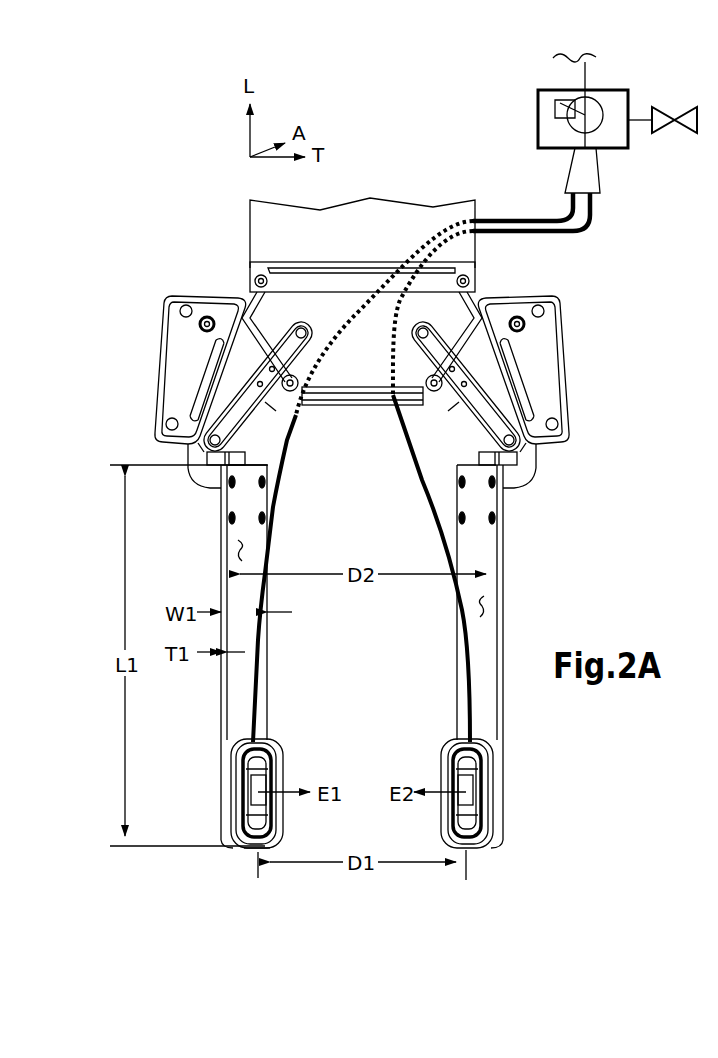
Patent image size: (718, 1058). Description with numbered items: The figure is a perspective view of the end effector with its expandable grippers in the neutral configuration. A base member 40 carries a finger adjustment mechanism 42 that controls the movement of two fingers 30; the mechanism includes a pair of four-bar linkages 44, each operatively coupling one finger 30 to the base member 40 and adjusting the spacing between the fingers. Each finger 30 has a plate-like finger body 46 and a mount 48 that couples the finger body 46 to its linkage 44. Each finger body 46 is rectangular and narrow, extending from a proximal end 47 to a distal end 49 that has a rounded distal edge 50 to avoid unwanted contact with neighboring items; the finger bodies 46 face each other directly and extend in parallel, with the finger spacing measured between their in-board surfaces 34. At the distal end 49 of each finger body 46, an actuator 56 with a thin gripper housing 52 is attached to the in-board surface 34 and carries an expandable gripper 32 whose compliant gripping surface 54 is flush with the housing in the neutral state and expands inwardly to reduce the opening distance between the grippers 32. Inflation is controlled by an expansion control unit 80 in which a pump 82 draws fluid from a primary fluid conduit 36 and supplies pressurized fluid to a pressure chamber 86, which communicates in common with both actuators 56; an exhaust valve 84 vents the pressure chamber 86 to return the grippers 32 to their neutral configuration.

The finger 30 is at (404, 656).
The expandable gripper 32 is at (281, 755).
The in-board surface 34 is at (238, 550).
The primary fluid conduit 36 is at (577, 66).
The base member 40 is at (333, 300).
The finger adjustment mechanism 42 is at (147, 379).
The linkage 44 is at (160, 340).
The finger body 46 is at (404, 656).
The proximal end 47 is at (255, 458).
The mount 48 is at (247, 508).
The distal end 49 is at (250, 842).
The rounded distal edge 50 is at (368, 796).
The gripper housing 52 is at (368, 769).
The compliant gripping surface 54 is at (362, 776).
The actuator 56 is at (368, 776).
The expansion control unit 80 is at (580, 136).
The pump 82 is at (560, 100).
The exhaust valve 84 is at (675, 120).
The pressure chamber 86 is at (628, 142).